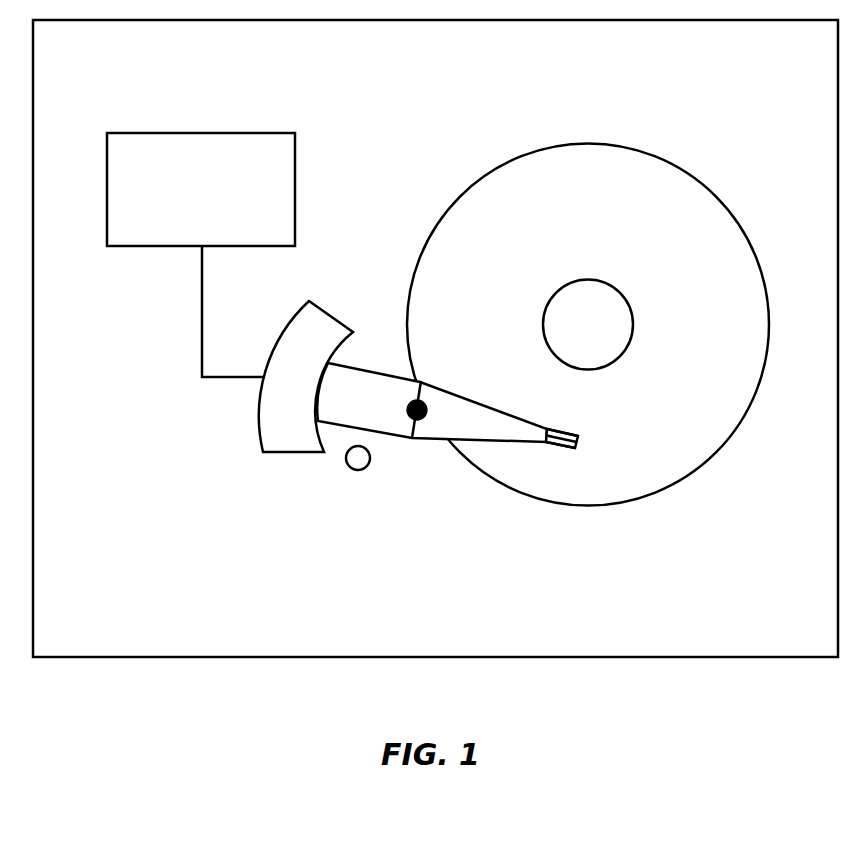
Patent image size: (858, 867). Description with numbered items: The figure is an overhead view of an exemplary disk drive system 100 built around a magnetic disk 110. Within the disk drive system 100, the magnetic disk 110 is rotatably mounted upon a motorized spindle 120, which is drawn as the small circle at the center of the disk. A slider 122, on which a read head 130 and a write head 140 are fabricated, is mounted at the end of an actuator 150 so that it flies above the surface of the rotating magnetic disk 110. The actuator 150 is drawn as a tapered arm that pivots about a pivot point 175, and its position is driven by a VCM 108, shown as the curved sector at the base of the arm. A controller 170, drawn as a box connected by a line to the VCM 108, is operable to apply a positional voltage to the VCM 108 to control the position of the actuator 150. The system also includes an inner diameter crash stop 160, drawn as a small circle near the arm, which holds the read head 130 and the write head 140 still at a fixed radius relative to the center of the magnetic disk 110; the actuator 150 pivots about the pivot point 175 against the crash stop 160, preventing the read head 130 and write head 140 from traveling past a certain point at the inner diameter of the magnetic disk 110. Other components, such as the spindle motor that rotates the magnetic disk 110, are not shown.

The disk drive system 100 is at (435, 338).
The VCM 108 is at (275, 453).
The magnetic disk 110 is at (588, 325).
The motorized spindle 120 is at (633, 326).
The slider 122 is at (576, 448).
The read head 130 is at (563, 432).
The write head 140 is at (562, 450).
The actuator 150 is at (392, 440).
The inner diameter crash stop 160 is at (355, 470).
The controller 170 is at (201, 255).
The pivot point 175 is at (424, 406).